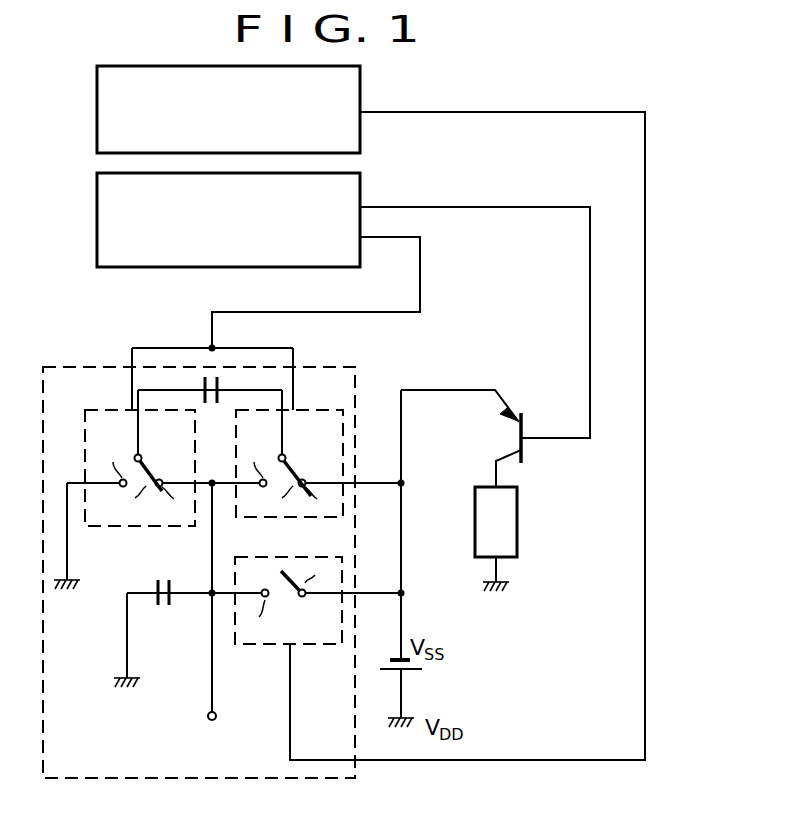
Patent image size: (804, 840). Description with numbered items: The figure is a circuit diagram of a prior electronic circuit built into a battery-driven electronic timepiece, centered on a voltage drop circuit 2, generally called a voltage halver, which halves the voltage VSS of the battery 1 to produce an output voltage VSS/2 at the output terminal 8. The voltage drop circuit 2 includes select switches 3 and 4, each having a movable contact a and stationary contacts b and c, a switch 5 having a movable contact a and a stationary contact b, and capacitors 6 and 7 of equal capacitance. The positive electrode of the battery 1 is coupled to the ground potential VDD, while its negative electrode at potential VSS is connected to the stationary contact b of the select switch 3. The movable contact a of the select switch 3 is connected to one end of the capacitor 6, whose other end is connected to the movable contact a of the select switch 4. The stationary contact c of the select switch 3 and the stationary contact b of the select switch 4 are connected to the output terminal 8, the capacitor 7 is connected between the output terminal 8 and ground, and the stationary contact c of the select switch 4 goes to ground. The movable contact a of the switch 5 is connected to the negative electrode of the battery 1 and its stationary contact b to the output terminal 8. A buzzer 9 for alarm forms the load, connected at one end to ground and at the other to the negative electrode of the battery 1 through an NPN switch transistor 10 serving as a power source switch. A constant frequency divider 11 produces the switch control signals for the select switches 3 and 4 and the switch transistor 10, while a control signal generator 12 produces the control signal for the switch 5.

The battery 1 is at (415, 663).
The voltage drop circuit 2 is at (327, 778).
The select switch 3 is at (318, 415).
The select switch 4 is at (107, 410).
The switch 5 is at (294, 558).
The capacitor 6 is at (215, 405).
The capacitor 7 is at (168, 557).
The output terminal 8 is at (208, 720).
The buzzer 9 is at (512, 525).
The switch transistor 10 is at (525, 448).
The constant frequency divider 11 is at (97, 228).
The control signal generator 12 is at (97, 96).